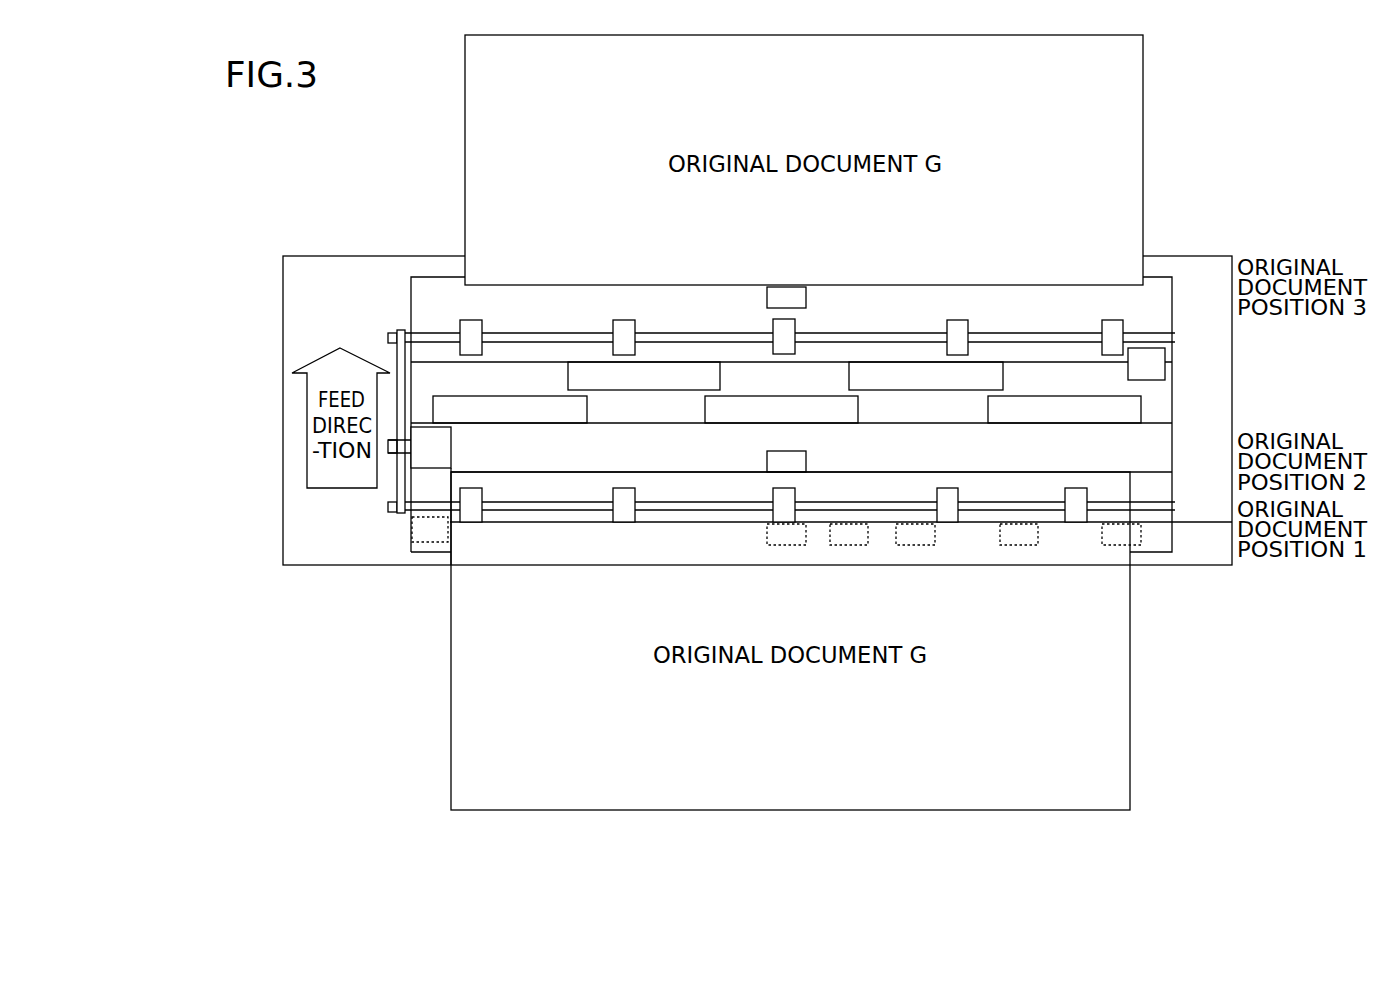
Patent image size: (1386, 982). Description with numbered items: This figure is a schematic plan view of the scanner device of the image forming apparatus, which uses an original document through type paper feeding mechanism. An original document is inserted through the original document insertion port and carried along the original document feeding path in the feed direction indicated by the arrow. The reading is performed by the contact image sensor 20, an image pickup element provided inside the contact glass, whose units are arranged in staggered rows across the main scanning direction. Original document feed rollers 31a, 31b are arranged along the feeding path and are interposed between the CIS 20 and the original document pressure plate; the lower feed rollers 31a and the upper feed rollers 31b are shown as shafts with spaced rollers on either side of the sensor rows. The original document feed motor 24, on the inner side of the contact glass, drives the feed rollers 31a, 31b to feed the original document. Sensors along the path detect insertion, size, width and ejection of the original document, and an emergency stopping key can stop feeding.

The contact image sensor 20 is at (1172, 424).
The original document feed motor 24 is at (451, 452).
The original document feed roller 31a is at (1175, 506).
The original document feed roller 31b is at (1175, 337).